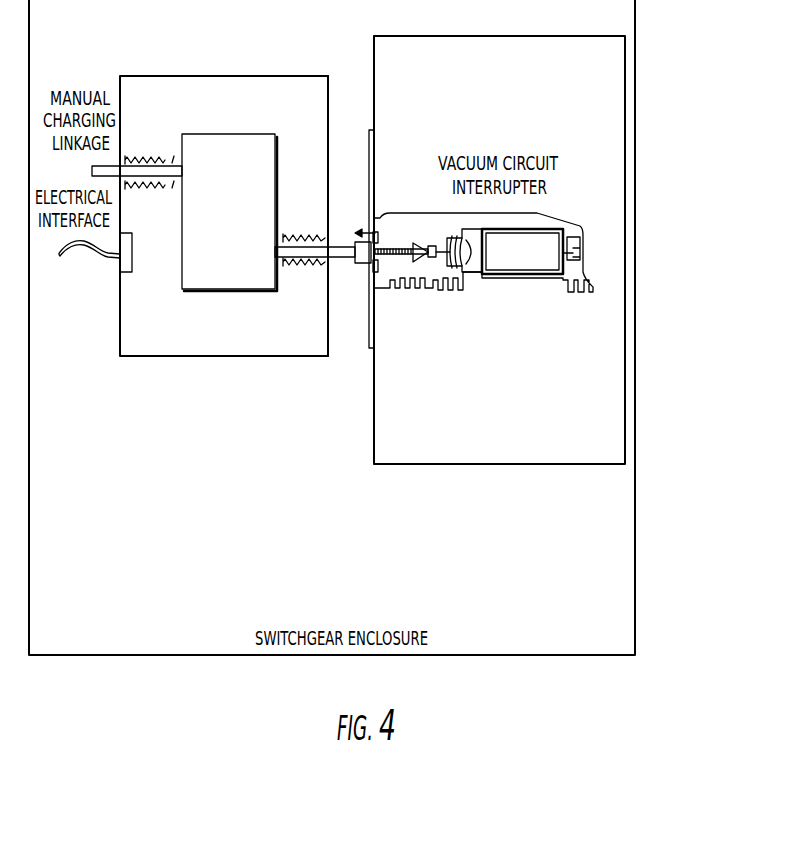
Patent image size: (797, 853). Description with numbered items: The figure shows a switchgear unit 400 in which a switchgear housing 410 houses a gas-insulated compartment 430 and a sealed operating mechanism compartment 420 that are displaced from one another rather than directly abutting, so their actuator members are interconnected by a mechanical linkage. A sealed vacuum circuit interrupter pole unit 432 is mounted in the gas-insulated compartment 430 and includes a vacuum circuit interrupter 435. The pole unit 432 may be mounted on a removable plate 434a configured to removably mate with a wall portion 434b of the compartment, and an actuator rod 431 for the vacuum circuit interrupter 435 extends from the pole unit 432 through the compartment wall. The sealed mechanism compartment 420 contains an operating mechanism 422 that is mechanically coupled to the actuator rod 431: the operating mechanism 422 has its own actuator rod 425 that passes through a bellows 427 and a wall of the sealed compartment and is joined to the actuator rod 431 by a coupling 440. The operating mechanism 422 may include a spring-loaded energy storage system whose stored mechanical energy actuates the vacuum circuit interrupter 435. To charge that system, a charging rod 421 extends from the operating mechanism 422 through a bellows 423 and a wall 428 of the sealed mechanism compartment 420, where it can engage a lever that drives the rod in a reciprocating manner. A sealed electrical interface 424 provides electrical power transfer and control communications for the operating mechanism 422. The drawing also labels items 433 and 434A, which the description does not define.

The switchgear unit 400 is at (589, 676).
The switchgear housing 410 is at (635, 509).
The sealed operating mechanism compartment 420 is at (173, 357).
The charging rod 421 is at (92, 171).
The operating mechanism 422 is at (223, 133).
The bellows 423 is at (138, 157).
The sealed electrical interface 424 is at (327, 106).
The actuator rod 425 is at (342, 245).
The bellows 427 is at (306, 265).
The wall 428 is at (120, 322).
The gas-insulated compartment 430 is at (558, 465).
The actuator rod 431 is at (370, 265).
The sealed vacuum circuit interrupter pole unit 432 is at (543, 215).
The bellows 433 is at (460, 237).
The removable plate 434a is at (375, 158).
The wall portion 434b is at (375, 102).
The wall of gas-insulated compartment 434A is at (375, 418).
The vacuum circuit interrupter 435 is at (533, 260).
The coupling 440 is at (370, 237).